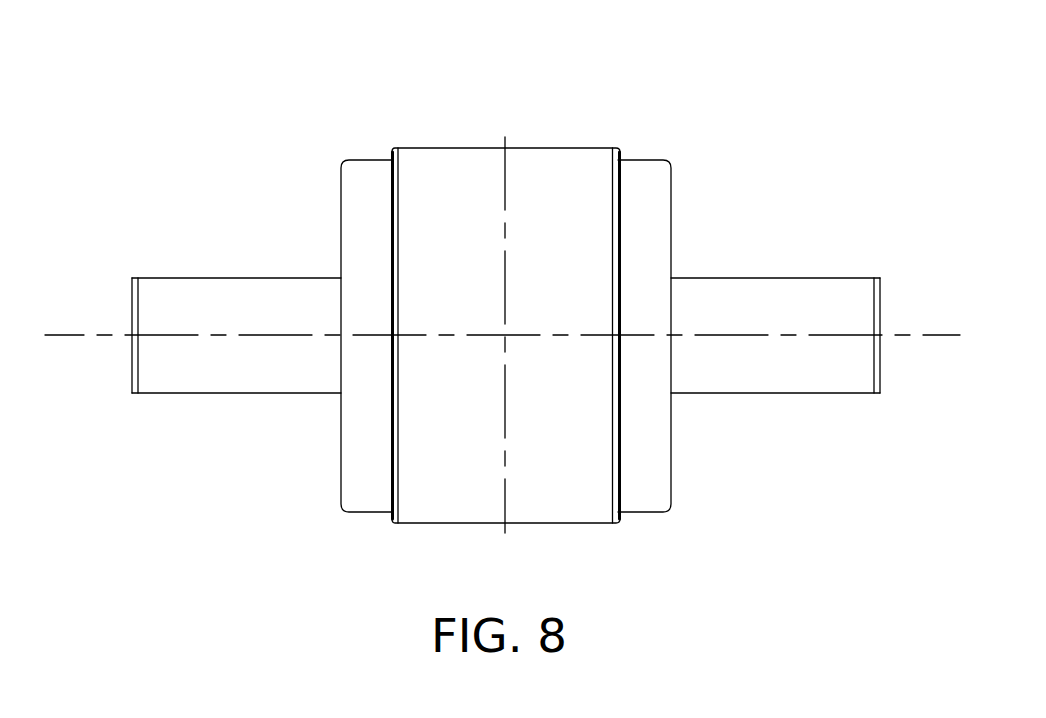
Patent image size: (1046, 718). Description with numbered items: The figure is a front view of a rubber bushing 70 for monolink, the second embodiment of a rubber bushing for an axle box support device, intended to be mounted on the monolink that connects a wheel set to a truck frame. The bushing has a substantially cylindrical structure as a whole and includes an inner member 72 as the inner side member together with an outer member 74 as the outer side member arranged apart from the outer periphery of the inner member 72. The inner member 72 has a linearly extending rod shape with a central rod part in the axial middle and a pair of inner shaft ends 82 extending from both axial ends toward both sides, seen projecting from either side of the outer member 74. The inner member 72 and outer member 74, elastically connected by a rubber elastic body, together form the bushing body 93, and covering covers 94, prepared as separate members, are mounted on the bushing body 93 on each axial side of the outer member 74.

The rubber bushing for monolink 70 is at (655, 68).
The inner member 72 is at (232, 275).
The outer member 74 is at (456, 490).
The inner shaft ends 82 is at (215, 367).
The bushing body 93 is at (537, 144).
The covering covers 94 is at (369, 175).